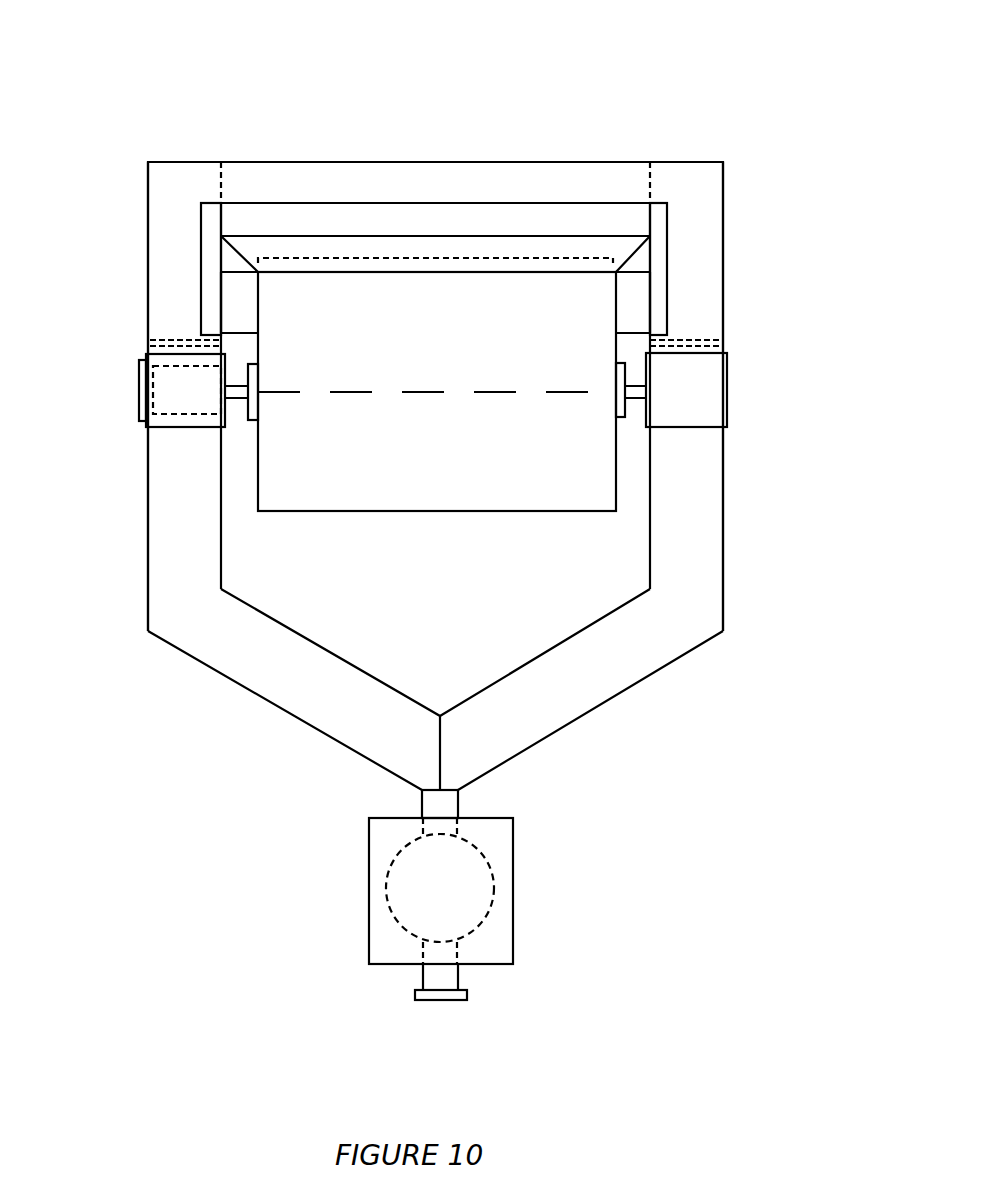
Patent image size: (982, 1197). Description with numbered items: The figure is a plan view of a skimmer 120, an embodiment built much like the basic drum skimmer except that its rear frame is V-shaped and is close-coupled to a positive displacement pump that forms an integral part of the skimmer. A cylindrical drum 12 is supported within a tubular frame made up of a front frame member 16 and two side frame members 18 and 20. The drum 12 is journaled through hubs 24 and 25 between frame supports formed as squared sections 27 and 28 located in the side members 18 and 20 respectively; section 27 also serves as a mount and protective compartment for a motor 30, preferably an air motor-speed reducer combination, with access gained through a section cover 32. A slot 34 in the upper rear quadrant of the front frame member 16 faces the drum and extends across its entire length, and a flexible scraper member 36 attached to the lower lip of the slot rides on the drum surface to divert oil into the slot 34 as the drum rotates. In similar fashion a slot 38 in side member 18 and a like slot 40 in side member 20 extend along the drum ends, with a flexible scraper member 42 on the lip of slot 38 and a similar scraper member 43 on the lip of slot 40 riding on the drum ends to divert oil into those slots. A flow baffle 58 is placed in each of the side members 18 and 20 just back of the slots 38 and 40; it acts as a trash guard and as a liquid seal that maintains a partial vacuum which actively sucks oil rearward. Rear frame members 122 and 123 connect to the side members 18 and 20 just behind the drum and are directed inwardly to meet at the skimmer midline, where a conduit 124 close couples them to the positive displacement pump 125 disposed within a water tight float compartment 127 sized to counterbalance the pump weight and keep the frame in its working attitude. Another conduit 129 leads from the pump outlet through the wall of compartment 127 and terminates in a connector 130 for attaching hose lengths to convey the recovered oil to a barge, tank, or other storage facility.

The skimmer 120 is at (453, 27).
The drum 12 is at (560, 467).
The front frame member 16 is at (583, 183).
The side frame member 18 is at (170, 547).
The side frame member 20 is at (690, 582).
The hub 24 is at (243, 413).
The hub 25 is at (620, 420).
The squared section 27 is at (173, 355).
The squared section 28 is at (712, 397).
The motor 30 is at (193, 388).
The section cover 32 is at (140, 397).
The slot 34 is at (517, 232).
The flexible scraper member 36 is at (333, 256).
The slot 38 is at (210, 213).
The slot 40 is at (656, 220).
The flexible scraper member 42 is at (232, 288).
The scraper member 43 is at (662, 278).
The flow baffle 58 is at (170, 337).
The rear frame member 122 is at (377, 725).
The rear frame member 123 is at (582, 677).
The conduit 124 is at (445, 808).
The positive displacement pump 125 is at (417, 907).
The float compartment 127 is at (515, 908).
The conduit 129 is at (460, 978).
The connector 130 is at (420, 997).